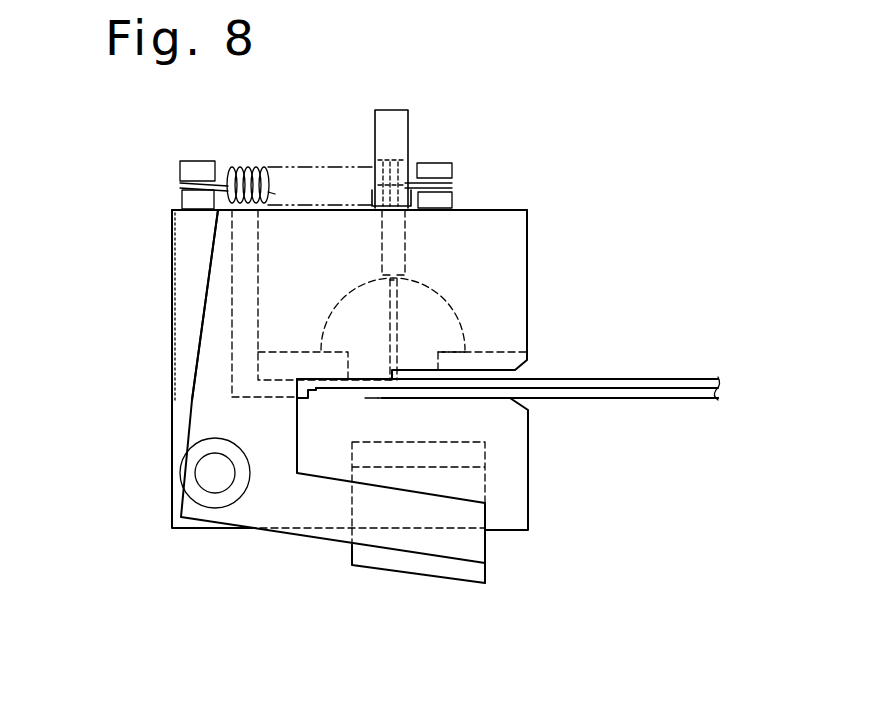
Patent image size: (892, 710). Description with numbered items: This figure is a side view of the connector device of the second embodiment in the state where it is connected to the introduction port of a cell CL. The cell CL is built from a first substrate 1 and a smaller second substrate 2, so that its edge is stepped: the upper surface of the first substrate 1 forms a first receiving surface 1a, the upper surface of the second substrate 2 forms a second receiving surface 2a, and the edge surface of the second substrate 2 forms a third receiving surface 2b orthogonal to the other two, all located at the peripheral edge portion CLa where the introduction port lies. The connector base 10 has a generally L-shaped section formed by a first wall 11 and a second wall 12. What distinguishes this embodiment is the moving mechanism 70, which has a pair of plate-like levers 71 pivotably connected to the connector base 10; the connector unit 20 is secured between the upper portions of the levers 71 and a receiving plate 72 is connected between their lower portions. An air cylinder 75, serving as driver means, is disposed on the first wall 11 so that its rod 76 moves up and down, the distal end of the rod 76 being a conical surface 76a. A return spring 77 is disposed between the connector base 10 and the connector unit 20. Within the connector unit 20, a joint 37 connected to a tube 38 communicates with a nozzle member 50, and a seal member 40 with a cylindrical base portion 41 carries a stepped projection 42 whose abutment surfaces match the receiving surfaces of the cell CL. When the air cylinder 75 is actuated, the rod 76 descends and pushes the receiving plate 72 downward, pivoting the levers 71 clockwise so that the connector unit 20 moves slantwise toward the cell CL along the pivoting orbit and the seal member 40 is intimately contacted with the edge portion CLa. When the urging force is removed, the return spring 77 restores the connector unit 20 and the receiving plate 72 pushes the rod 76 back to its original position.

The first substrate 1 is at (683, 400).
The first receiving surface 1a is at (373, 390).
The second substrate 2 is at (653, 380).
The second receiving surface 2a is at (413, 390).
The third receiving surface 2b is at (390, 382).
The connector base 10 is at (159, 300).
The first wall 11 is at (520, 475).
The second wall 12 is at (170, 330).
The connector unit 20 is at (540, 247).
The joint 37 is at (405, 243).
The tube 38 is at (408, 128).
The seal member 40 is at (470, 307).
The base portion 41 is at (462, 335).
The projection 42 is at (383, 408).
The nozzle member 50 is at (390, 300).
The moving mechanism 70 is at (192, 268).
The lever 71 is at (196, 358).
The receiving plate 72 is at (417, 577).
The air cylinder 75 is at (487, 453).
The rod 76 is at (470, 487).
The conical surface 76a is at (377, 550).
The return spring 77 is at (250, 167).
The cell CL is at (700, 364).
The peripheral edge portion CLa is at (363, 408).